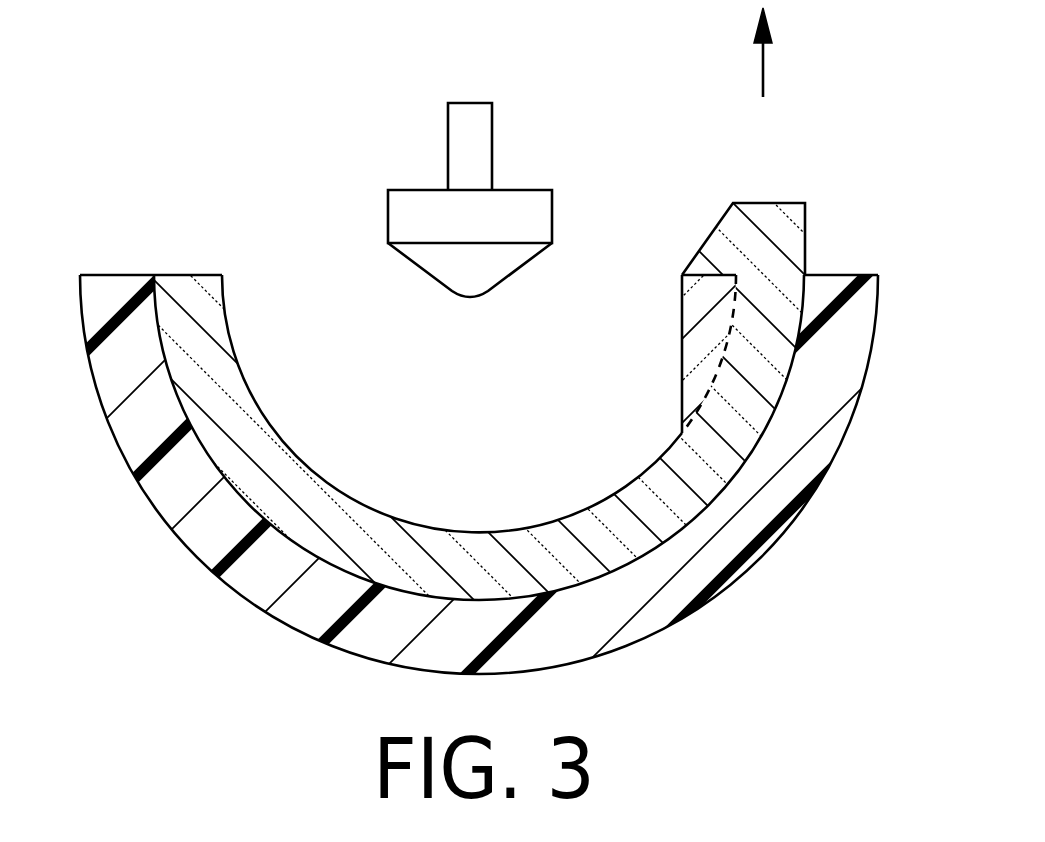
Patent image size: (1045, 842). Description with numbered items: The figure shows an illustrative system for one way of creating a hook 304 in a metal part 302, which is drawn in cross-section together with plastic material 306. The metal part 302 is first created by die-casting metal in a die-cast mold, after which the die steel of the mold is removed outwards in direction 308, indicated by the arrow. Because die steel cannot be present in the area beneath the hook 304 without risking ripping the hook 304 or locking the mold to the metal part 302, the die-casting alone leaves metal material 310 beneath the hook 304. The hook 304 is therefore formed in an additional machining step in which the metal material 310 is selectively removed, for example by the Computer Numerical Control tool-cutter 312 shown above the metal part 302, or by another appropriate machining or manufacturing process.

The metal part 302 is at (178, 302).
The hook 304 is at (773, 213).
The plastic material 306 is at (178, 493).
The direction 308 is at (762, 84).
The metal material 310 is at (681, 360).
The CNC tool-cutter 312 is at (410, 193).